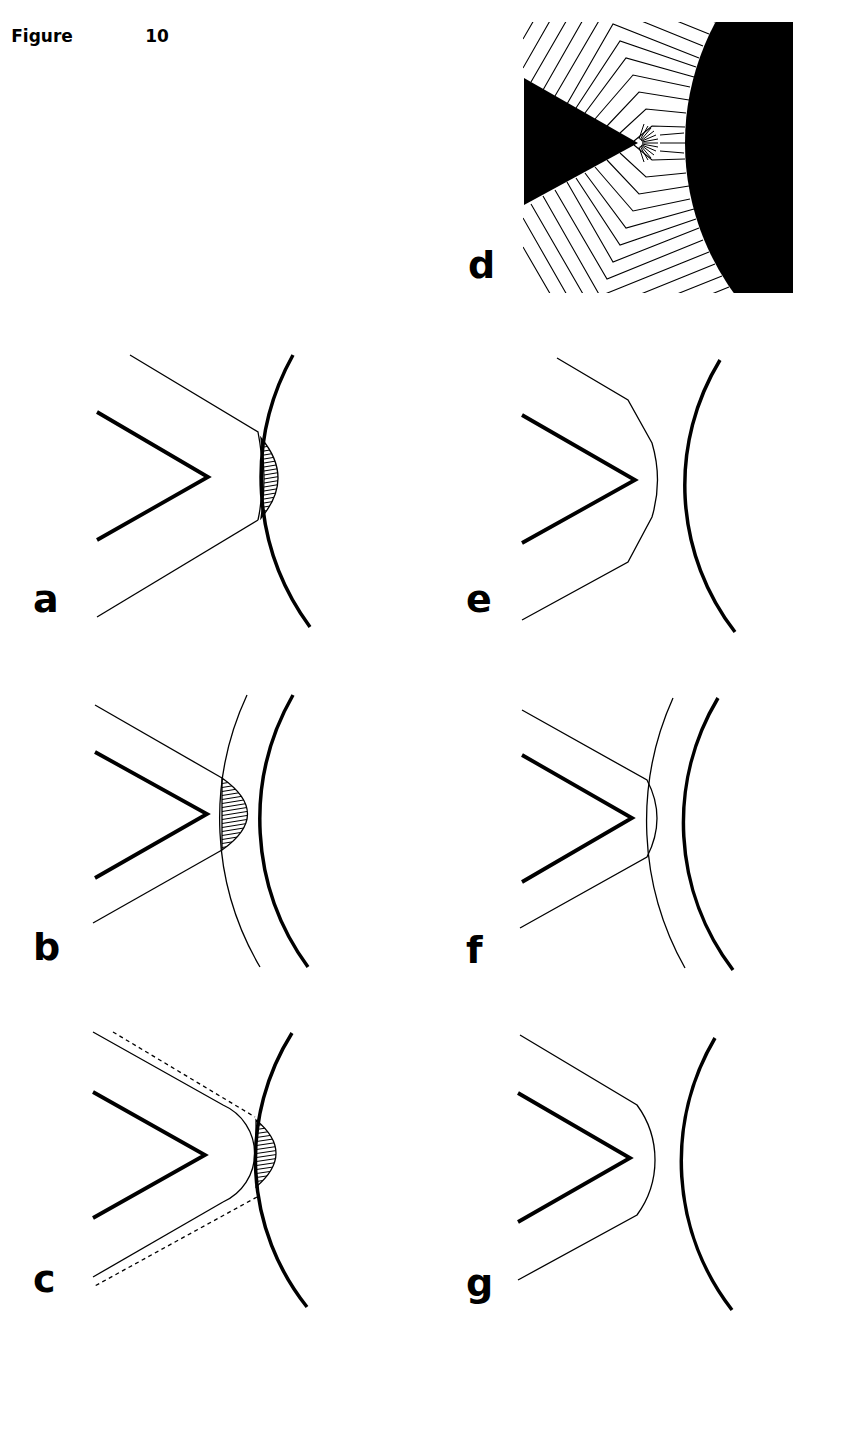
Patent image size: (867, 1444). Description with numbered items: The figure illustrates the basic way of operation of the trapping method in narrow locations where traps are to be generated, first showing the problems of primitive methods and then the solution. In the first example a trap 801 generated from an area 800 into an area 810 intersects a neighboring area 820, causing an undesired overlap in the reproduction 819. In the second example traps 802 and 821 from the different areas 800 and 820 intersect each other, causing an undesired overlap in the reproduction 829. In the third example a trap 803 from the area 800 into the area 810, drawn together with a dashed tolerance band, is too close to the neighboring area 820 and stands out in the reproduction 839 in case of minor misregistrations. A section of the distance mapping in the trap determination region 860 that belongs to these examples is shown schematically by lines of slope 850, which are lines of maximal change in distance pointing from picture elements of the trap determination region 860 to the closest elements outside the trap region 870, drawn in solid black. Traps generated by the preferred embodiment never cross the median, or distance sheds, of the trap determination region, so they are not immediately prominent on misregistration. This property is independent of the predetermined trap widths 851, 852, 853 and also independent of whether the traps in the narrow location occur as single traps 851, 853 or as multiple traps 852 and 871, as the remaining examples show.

The area 800 is at (146, 490).
The trap 801 is at (160, 395).
The trap 802 is at (117, 735).
The trap 803 is at (132, 1075).
The area 810 is at (245, 572).
The undesired overlap in the reproduction 819 is at (284, 481).
The neighboring area 820 is at (337, 560).
The trap 821 is at (255, 736).
The undesired overlap in the reproduction 829 is at (245, 847).
The undesired overlap in the reproduction 839 is at (280, 1164).
The lines of slope 850 is at (673, 113).
The trap width 851 is at (585, 403).
The trap width 852 is at (555, 748).
The trap width 853 is at (555, 1081).
The trap determination region 860 is at (626, 173).
The trap region 870 is at (695, 199).
The trap 871 is at (684, 741).